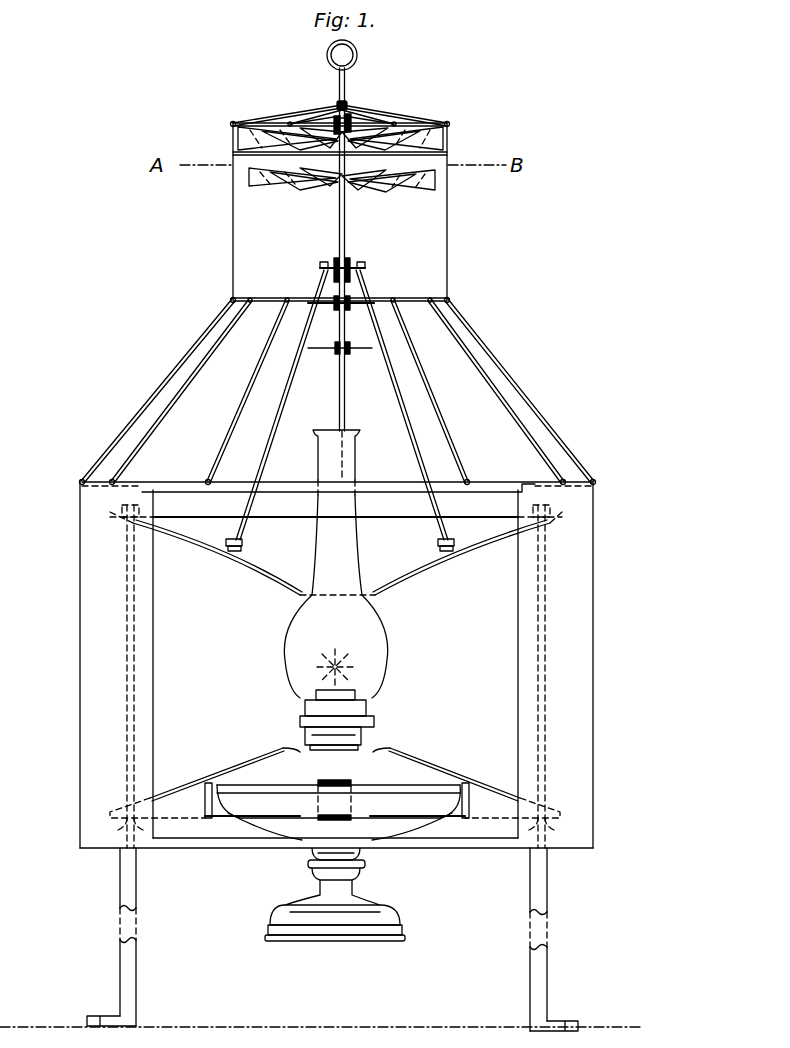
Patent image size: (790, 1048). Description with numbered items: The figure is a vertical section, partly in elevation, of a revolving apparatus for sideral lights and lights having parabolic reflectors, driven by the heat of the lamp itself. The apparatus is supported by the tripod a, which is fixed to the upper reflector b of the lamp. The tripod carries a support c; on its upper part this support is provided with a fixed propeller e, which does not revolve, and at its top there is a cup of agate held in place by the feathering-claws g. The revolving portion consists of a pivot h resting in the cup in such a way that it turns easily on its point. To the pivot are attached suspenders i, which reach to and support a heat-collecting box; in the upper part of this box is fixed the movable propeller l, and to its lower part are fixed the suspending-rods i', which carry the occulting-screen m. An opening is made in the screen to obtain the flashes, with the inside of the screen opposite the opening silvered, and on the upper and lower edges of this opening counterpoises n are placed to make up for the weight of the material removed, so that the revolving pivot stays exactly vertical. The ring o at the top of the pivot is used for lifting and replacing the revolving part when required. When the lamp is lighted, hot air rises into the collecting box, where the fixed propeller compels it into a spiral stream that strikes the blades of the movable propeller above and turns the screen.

The ring o is at (358, 56).
The support c is at (347, 273).
The pivot h is at (346, 97).
The feathering-claws g is at (346, 123).
The suspenders i is at (340, 112).
The movable propeller l is at (340, 138).
The fixed propeller e is at (342, 180).
The tripod a is at (340, 410).
The suspending-rods i' is at (338, 391).
The occulting-screen m is at (336, 665).
The upper reflector b is at (336, 553).
The counterpoises n is at (335, 711).